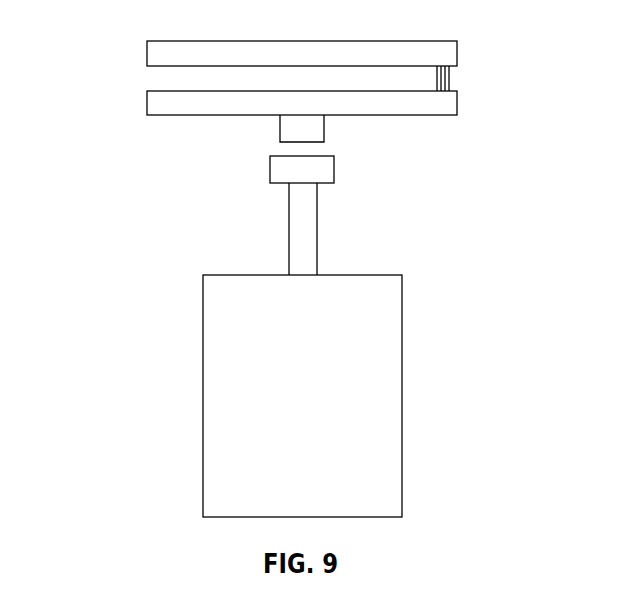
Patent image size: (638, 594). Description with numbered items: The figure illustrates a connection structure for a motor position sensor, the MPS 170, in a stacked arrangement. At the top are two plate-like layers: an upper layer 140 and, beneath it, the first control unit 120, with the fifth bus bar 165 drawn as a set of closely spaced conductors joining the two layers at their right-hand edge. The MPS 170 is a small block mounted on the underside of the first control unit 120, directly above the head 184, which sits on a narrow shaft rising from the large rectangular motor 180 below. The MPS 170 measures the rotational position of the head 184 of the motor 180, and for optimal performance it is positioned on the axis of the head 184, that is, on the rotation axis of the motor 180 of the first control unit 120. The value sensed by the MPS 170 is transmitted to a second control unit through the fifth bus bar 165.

The first control unit 120 is at (148, 98).
The upper plate 140 is at (148, 53).
The fifth bus bar 165 is at (452, 77).
The MPS 170 is at (318, 130).
The motor 180 is at (213, 427).
The head 184 is at (275, 168).